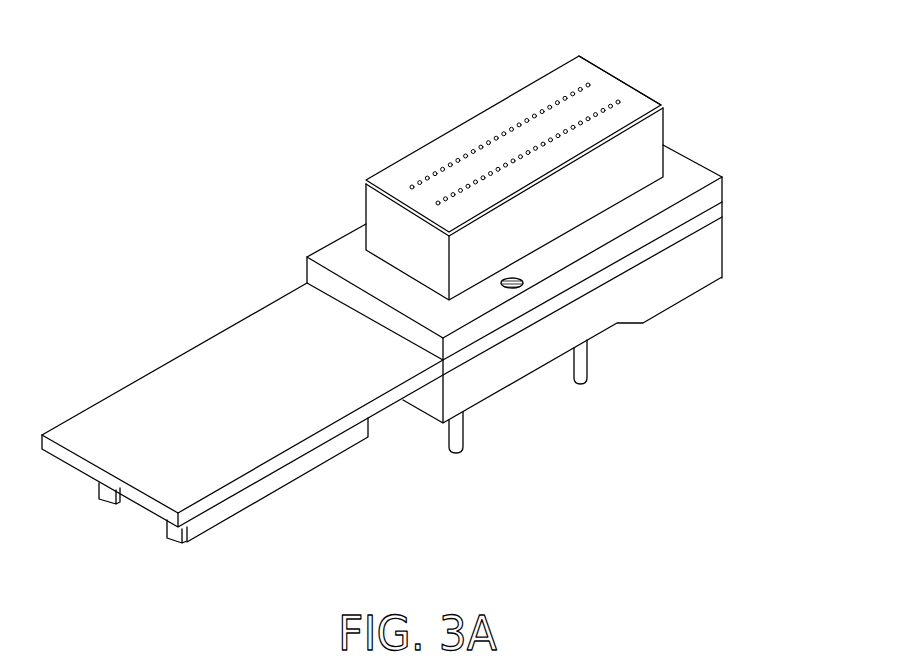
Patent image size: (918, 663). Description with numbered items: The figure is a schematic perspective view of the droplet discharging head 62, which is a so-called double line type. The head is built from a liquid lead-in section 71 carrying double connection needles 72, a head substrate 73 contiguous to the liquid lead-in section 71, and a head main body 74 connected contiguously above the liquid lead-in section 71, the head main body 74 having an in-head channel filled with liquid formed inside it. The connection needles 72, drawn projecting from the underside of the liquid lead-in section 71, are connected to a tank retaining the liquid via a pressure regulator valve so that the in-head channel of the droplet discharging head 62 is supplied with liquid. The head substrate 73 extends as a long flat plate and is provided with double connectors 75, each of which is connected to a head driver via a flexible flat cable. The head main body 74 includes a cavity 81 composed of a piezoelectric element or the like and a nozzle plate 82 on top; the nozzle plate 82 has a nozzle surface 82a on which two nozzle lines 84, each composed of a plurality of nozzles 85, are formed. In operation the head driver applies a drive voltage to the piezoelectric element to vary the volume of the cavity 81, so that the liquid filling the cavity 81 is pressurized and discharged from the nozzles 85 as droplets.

The droplet discharging head 62 is at (249, 96).
The liquid lead-in section 71 is at (705, 251).
The connection needles 72 is at (581, 388).
The head substrate 73 is at (716, 210).
The head main body 74 is at (744, 62).
The connectors 75 is at (105, 494).
The cavity 81 is at (650, 123).
The nozzle plate 82 is at (660, 103).
The nozzle surface 82a is at (410, 165).
The nozzle lines 84 is at (608, 75).
The nozzles 85 is at (570, 125).